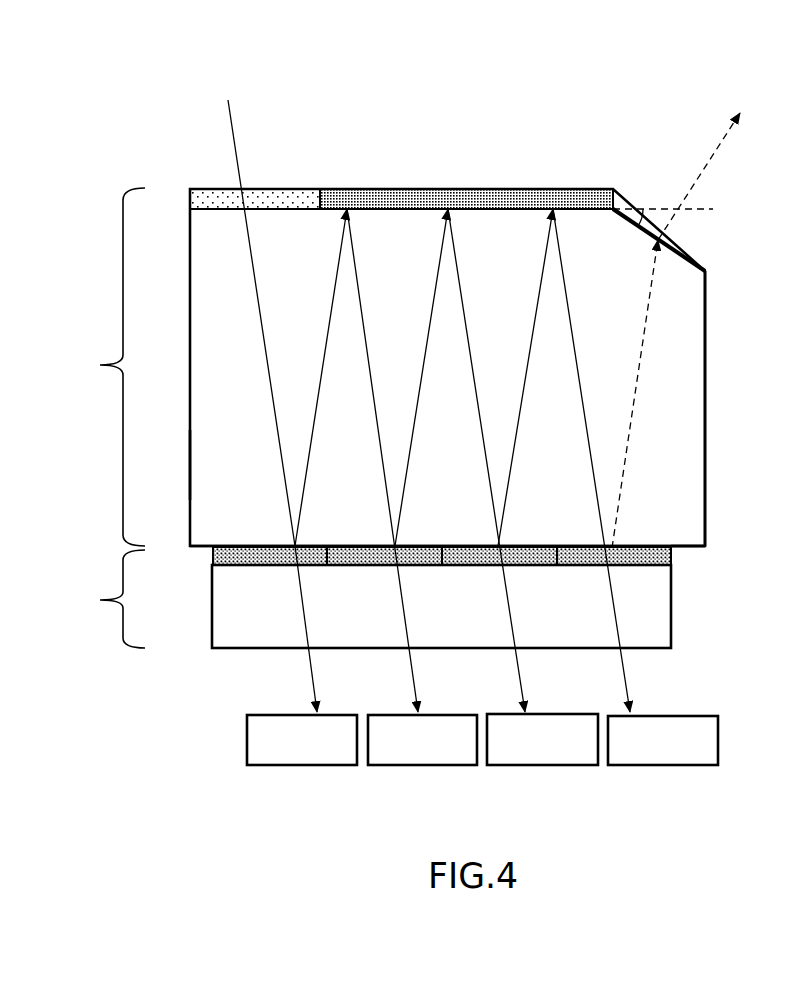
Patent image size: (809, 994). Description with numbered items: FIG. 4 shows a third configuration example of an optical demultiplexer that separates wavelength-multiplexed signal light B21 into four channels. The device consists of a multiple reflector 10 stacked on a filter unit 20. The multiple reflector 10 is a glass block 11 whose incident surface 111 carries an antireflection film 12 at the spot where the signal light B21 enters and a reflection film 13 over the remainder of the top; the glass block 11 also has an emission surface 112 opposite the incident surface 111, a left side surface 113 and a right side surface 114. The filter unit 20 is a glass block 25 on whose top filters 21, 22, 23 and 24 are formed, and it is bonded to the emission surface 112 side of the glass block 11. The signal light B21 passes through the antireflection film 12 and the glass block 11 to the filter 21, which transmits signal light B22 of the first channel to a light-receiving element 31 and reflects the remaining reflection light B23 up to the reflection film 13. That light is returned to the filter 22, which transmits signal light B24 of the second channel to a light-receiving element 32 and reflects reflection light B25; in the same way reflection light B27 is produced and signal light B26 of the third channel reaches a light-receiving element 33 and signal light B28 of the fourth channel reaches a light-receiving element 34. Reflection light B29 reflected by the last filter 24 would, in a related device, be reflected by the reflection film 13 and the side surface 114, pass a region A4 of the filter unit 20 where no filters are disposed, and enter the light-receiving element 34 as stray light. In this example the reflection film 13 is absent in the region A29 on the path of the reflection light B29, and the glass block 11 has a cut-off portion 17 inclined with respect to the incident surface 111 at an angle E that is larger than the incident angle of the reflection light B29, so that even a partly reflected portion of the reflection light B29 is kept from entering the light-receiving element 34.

The multiple reflector 10 is at (107, 367).
The glass block 11 is at (190, 300).
The antireflection film 12 is at (278, 190).
The reflection film 13 is at (567, 190).
The cut-off portion 17 is at (697, 262).
The filter unit 20 is at (107, 599).
The filter 21 is at (256, 567).
The filter 22 is at (354, 567).
The filter 23 is at (462, 567).
The filter 24 is at (570, 567).
The glass block 25 is at (212, 603).
The light-receiving element 31 is at (282, 767).
The light-receiving element 32 is at (410, 767).
The light-receiving element 33 is at (532, 767).
The light-receiving element 34 is at (645, 767).
The incident surface 111 is at (411, 211).
The emission surface 112 is at (205, 545).
The left side surface 113 is at (192, 470).
The side surface 114 is at (706, 340).
The signal light B21 is at (244, 323).
The signal light of a first channel B22 is at (327, 629).
The reflection light B23 is at (318, 377).
The signal light of a second channel B24 is at (405, 460).
The reflection light B25 is at (420, 377).
The signal light of a third channel B26 is at (509, 460).
The reflection light B27 is at (525, 377).
The signal light of a fourth channel B28 is at (613, 460).
The reflection light B29 is at (669, 330).
The region A29 is at (663, 192).
The region A4 is at (690, 551).
The angle E is at (647, 220).